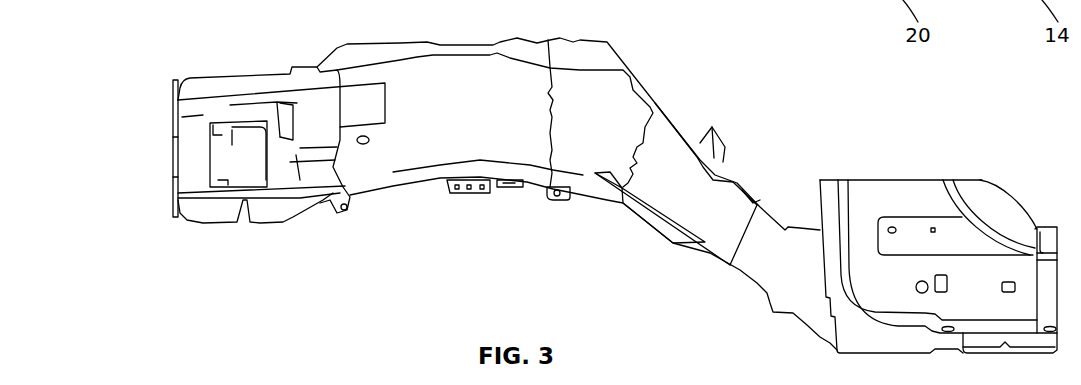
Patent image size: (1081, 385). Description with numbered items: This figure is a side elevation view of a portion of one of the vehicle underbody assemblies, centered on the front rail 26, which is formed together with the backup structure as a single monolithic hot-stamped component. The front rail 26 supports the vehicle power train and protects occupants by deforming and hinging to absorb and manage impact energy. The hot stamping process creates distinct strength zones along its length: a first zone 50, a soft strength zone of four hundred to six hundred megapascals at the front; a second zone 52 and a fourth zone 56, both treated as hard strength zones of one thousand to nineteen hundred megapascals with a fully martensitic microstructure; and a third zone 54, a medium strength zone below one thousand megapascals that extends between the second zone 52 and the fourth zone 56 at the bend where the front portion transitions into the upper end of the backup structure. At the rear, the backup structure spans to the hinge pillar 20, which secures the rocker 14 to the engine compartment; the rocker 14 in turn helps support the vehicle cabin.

The rocker 14 is at (1048, 232).
The hinge pillar 20 is at (923, 193).
The front rail 26 is at (509, 26).
The first zone 50 is at (263, 72).
The second zone 52 is at (403, 187).
The third zone 54 is at (577, 193).
The fourth zone 56 is at (655, 230).